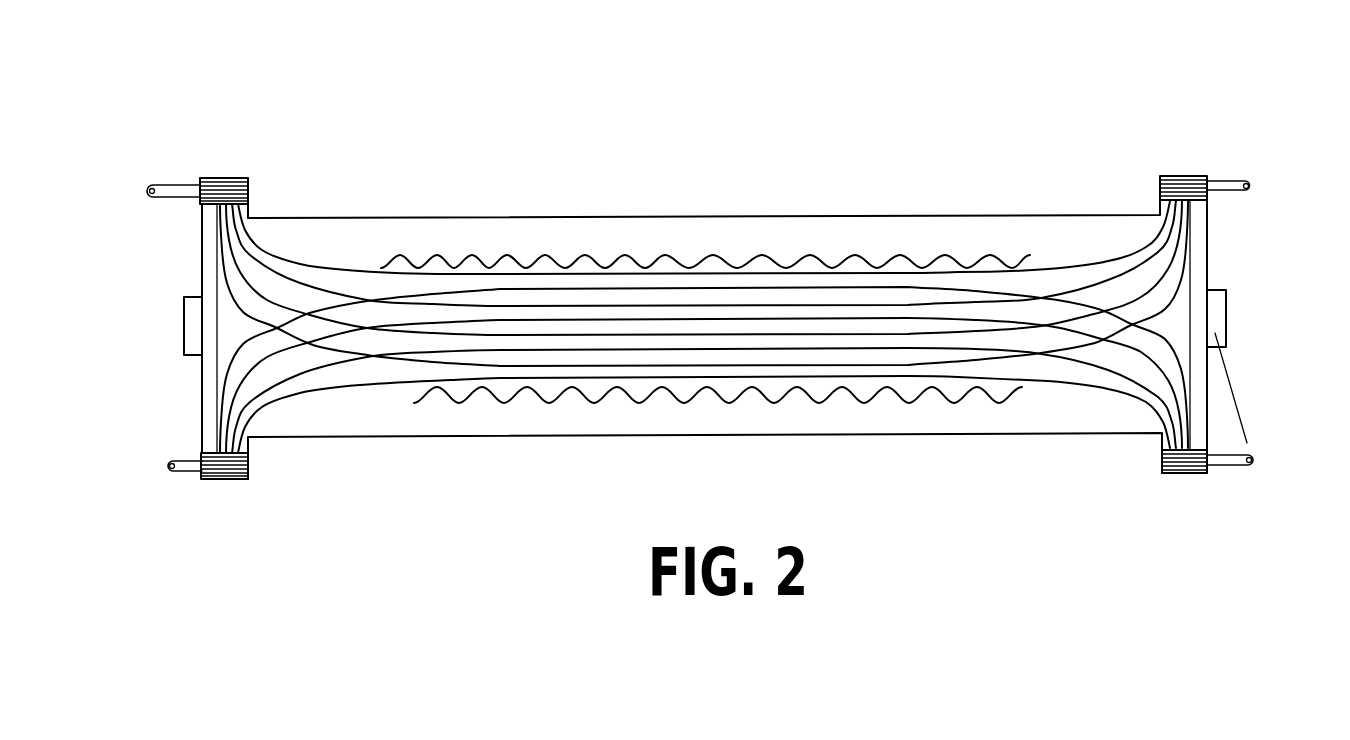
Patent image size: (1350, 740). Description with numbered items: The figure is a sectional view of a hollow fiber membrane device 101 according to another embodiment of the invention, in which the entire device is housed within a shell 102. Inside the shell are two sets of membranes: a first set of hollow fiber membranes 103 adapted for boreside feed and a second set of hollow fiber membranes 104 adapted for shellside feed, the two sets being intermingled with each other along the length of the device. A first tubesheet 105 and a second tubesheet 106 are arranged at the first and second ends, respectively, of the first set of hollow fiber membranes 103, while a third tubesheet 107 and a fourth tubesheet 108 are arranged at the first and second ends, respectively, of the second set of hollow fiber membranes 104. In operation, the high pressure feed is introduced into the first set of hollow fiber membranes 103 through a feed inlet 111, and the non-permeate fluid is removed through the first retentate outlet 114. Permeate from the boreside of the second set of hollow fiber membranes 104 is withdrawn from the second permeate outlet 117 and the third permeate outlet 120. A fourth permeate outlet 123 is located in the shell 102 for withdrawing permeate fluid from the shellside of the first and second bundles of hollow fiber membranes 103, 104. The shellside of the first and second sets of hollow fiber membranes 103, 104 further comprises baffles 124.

The hollow fiber membrane device 101 is at (116, 137).
The shell 102 is at (413, 218).
The first set of hollow fiber membranes 103 is at (290, 260).
The second set of hollow fiber membranes 104 is at (330, 392).
The first tubesheet 105 is at (222, 178).
The second tubesheet 106 is at (1183, 475).
The third tubesheet 107 is at (1185, 177).
The fourth tubesheet 108 is at (222, 480).
The feed inlet 111 is at (143, 189).
The first retentate outlet 114 is at (1257, 462).
The second permeate outlet 117 is at (1250, 187).
The third permeate outlet 120 is at (163, 467).
The fourth permeate outlet 123 is at (184, 322).
The baffles 124 is at (808, 255).